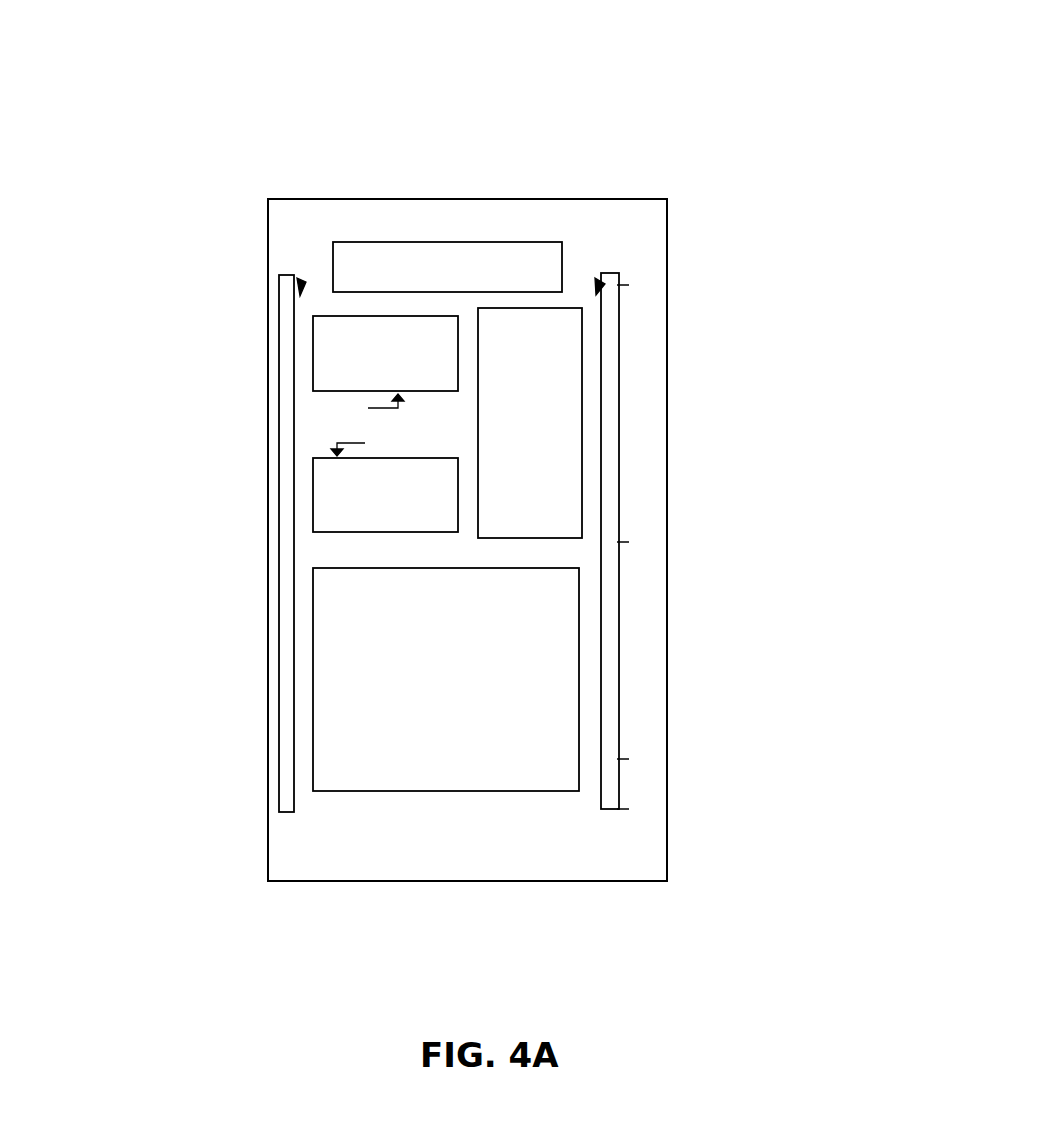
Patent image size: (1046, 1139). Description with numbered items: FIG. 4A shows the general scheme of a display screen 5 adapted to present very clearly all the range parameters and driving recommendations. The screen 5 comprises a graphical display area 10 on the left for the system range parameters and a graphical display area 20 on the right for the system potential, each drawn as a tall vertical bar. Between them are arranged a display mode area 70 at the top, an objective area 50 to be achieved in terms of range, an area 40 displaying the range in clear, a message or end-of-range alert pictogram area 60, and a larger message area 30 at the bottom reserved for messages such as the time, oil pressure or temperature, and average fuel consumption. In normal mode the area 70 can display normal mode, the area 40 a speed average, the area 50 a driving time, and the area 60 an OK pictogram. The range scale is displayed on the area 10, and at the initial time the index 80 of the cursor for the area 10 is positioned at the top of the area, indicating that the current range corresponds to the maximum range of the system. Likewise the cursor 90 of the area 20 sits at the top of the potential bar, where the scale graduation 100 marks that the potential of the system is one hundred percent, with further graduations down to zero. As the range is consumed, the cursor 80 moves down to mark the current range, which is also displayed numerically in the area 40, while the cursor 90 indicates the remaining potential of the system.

The display screen 5 is at (343, 93).
The graphical display area 10 is at (276, 320).
The graphical display area 20 is at (622, 340).
The message area 30 is at (395, 757).
The area displaying the range in clear 40 is at (351, 489).
The objective area 50 is at (346, 358).
The end of range alert pictogram area 60 is at (522, 475).
The display mode area 70 is at (472, 268).
The index of the cursor 80 is at (299, 283).
The cursor 90 is at (602, 282).
The scale marker 100 is at (642, 547).